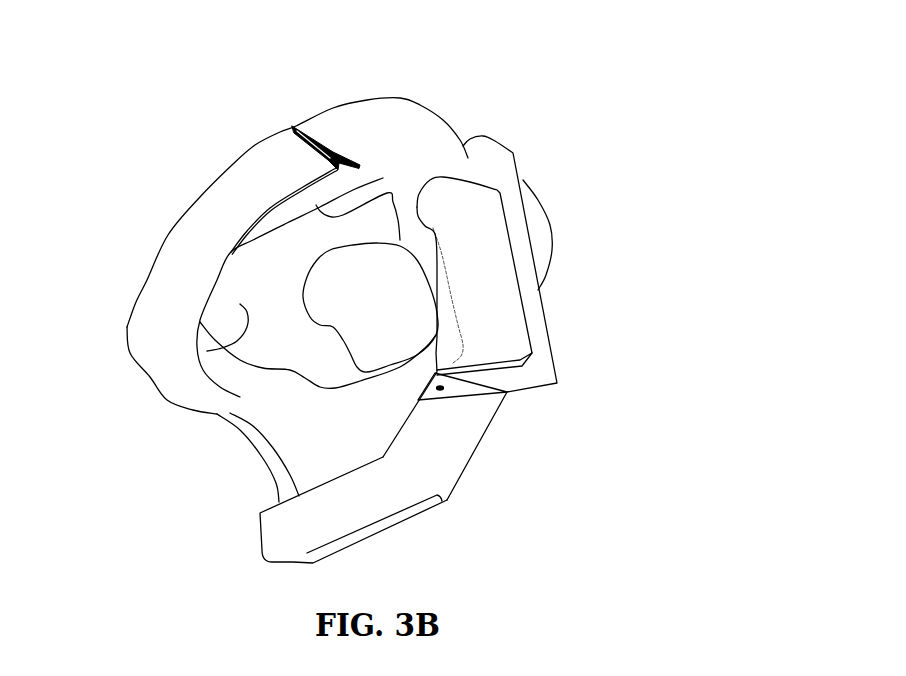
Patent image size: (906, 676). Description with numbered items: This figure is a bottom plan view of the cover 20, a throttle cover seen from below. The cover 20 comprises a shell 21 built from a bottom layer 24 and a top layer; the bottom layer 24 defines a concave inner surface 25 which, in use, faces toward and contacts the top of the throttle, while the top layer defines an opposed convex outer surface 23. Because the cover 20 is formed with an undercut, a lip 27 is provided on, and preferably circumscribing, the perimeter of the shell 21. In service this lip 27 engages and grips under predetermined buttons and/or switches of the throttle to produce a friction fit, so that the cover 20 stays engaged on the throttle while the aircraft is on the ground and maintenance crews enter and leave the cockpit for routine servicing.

The cover 20 is at (126, 148).
The shell 21 is at (315, 125).
The convex outer surface 23 is at (347, 98).
The bottom layer 24 is at (243, 307).
The concave inner surface 25 is at (307, 450).
The lip 27 is at (262, 508).